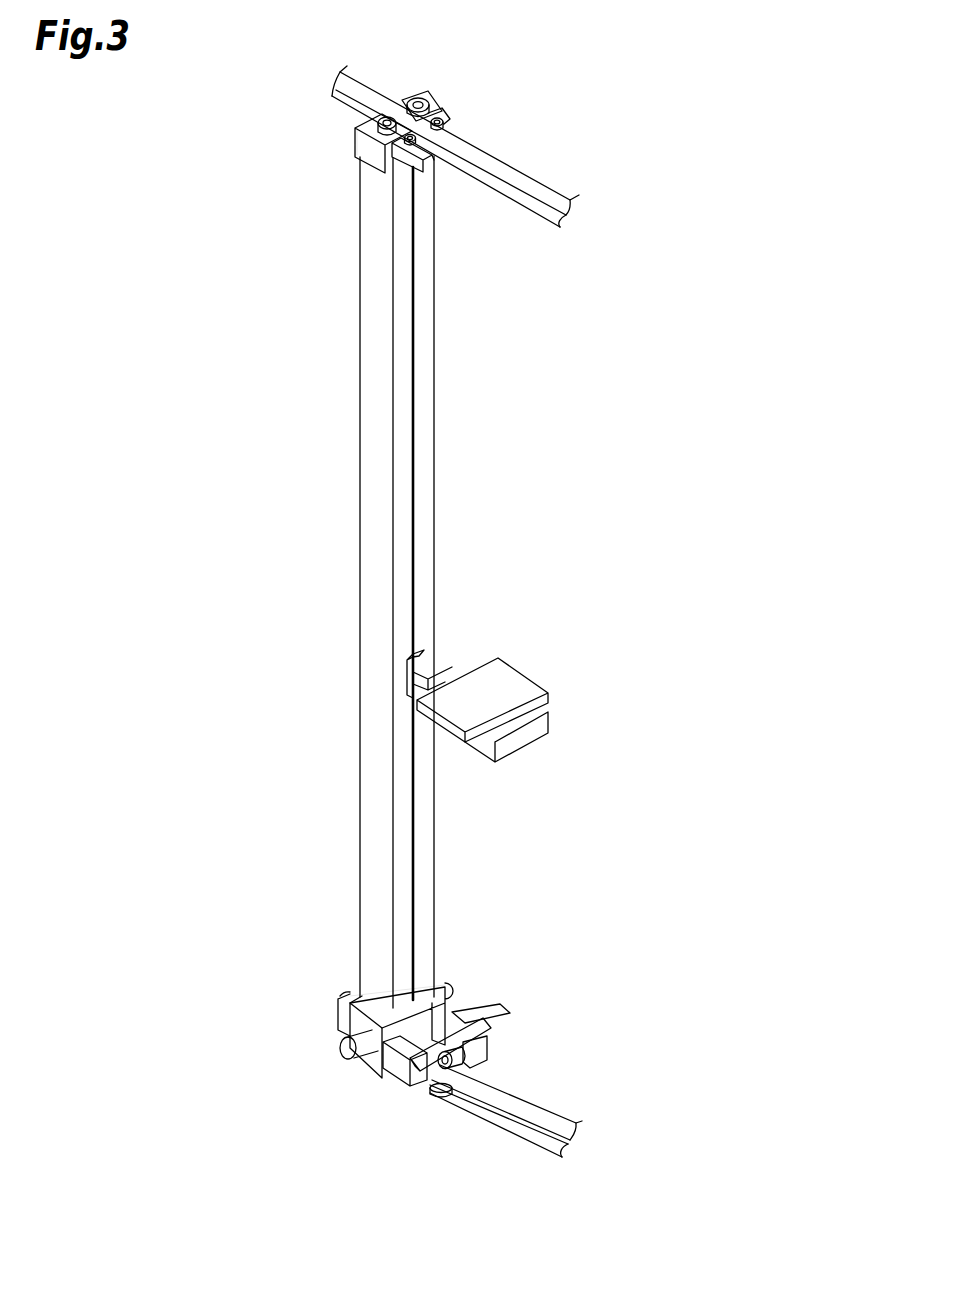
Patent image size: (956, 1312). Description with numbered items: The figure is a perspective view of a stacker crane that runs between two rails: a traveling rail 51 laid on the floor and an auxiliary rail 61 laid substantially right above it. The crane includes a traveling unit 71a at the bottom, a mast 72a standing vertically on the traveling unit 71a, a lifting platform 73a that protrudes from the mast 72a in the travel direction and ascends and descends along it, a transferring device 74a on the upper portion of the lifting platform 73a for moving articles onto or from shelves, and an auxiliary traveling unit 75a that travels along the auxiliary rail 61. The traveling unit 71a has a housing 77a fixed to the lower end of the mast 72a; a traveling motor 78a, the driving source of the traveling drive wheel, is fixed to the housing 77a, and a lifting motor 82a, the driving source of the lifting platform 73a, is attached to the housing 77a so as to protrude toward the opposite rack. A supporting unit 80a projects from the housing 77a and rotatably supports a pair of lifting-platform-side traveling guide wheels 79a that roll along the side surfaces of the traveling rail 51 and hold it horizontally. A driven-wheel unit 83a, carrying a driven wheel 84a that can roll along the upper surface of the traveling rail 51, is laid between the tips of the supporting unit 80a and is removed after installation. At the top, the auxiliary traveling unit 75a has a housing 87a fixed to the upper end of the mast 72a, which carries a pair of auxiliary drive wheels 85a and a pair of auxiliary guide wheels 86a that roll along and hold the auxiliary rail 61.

The auxiliary rail 61 is at (528, 210).
The traveling rail 51 is at (530, 1113).
The mast 72a is at (440, 521).
The lifting platform 73a is at (450, 680).
The transferring device 74a is at (523, 684).
The auxiliary traveling unit 75a is at (340, 148).
The auxiliary drive wheel 85a is at (427, 97).
The auxiliary guide wheel 86a is at (443, 128).
The housing 87a is at (373, 156).
The lifting motor 82a is at (452, 985).
The traveling unit 71a is at (473, 995).
The supporting unit 80a is at (488, 1033).
The driven wheel 84a is at (458, 1057).
The housing 77a is at (350, 1018).
The traveling motor 78a is at (346, 1052).
The driven-wheel unit 83a is at (410, 1090).
The lifting-platform-side traveling guide wheel 79a is at (442, 1100).